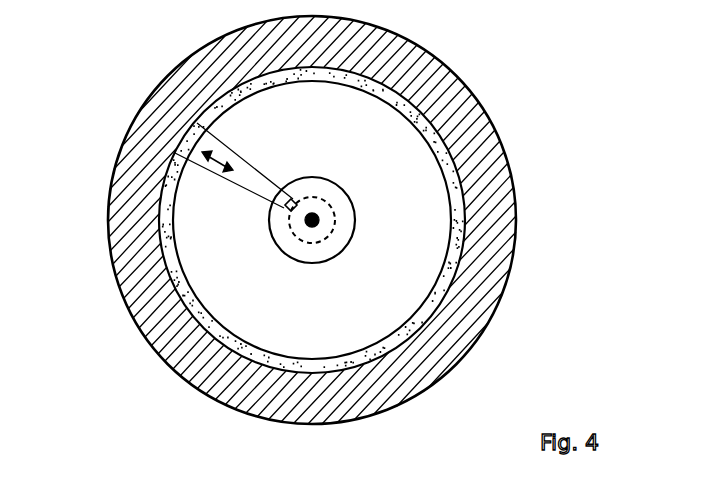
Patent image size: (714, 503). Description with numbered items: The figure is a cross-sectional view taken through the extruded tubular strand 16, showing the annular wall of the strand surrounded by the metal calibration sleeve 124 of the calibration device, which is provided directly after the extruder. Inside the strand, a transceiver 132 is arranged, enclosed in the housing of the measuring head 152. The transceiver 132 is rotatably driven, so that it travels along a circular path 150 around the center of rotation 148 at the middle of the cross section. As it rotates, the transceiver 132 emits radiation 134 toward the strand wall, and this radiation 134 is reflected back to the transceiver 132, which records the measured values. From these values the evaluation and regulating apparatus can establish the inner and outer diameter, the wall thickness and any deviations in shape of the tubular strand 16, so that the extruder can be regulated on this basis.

The tubular strand 16 is at (430, 127).
The metal calibration sleeve 124 is at (167, 335).
The transceiver 132 is at (297, 200).
The radiation emitted and reflected back 134 is at (160, 183).
The center of rotation 148 is at (317, 212).
The circular path 150 is at (330, 232).
The housing of the measuring head 152 is at (312, 263).